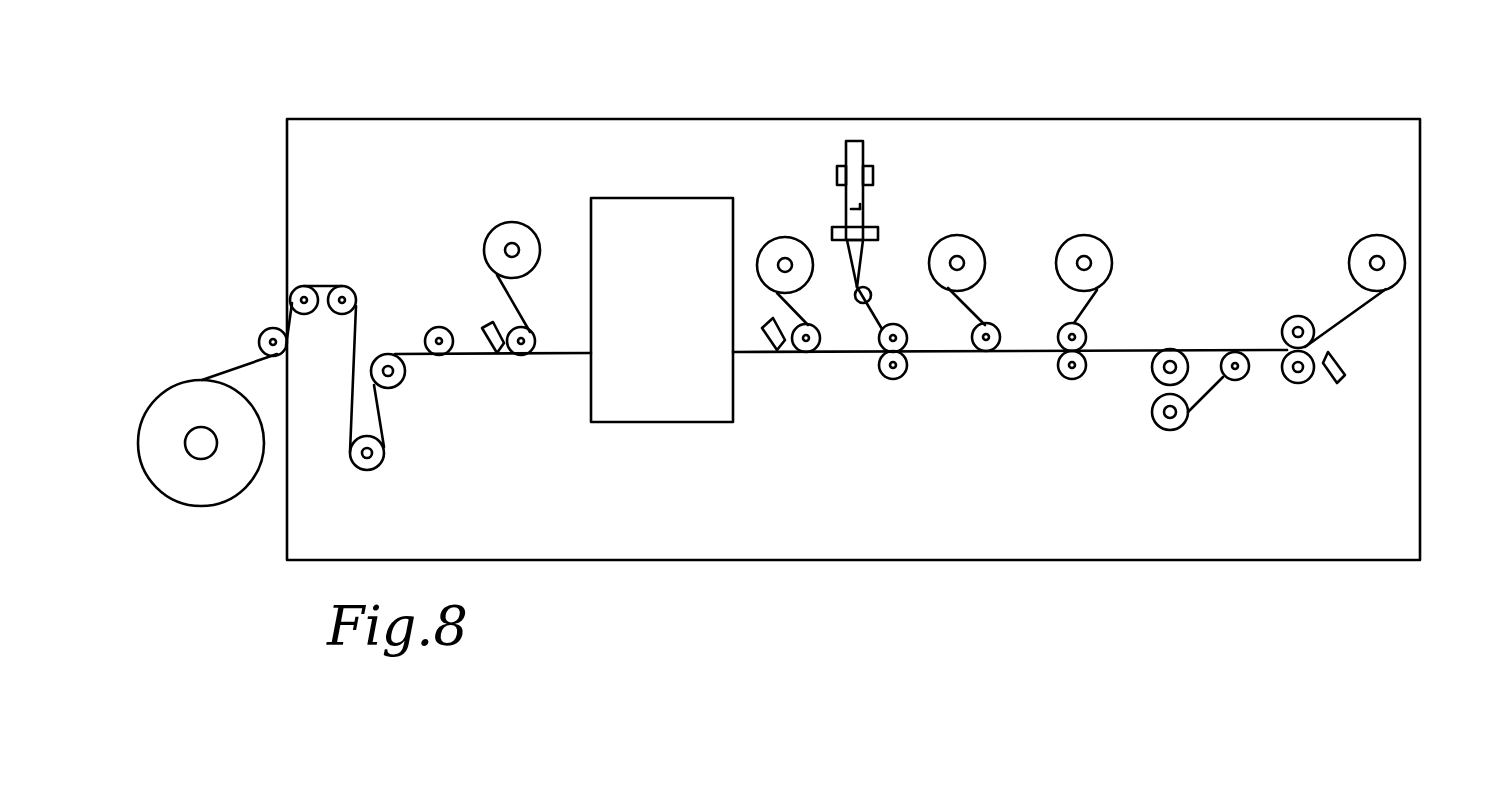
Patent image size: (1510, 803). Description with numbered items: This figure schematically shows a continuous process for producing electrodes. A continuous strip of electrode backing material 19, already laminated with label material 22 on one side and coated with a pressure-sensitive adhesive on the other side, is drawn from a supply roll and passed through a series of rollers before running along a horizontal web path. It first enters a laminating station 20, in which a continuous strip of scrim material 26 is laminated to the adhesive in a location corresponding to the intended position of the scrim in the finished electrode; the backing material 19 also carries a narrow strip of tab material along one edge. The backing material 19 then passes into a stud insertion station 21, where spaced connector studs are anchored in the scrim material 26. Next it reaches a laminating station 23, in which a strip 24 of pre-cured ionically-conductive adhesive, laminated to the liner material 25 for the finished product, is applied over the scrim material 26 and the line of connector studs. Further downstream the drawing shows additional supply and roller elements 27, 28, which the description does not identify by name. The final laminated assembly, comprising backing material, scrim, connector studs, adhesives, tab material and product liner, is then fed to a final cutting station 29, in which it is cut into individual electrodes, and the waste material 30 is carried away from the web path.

The electrode backing material 19 is at (357, 330).
The laminating station 20 is at (507, 180).
The stud insertion station 21 is at (668, 180).
The label material 22 is at (783, 180).
The laminating station 23 is at (855, 112).
The strip of pre-cured ionically-conductive adhesive 24 is at (870, 331).
The liner material 25 is at (978, 310).
The scrim material 26 is at (960, 178).
The web strip 27 is at (1087, 308).
The supply roll 28 is at (1084, 178).
The final cutting station 29 is at (1293, 178).
The waste material 30 is at (1367, 307).